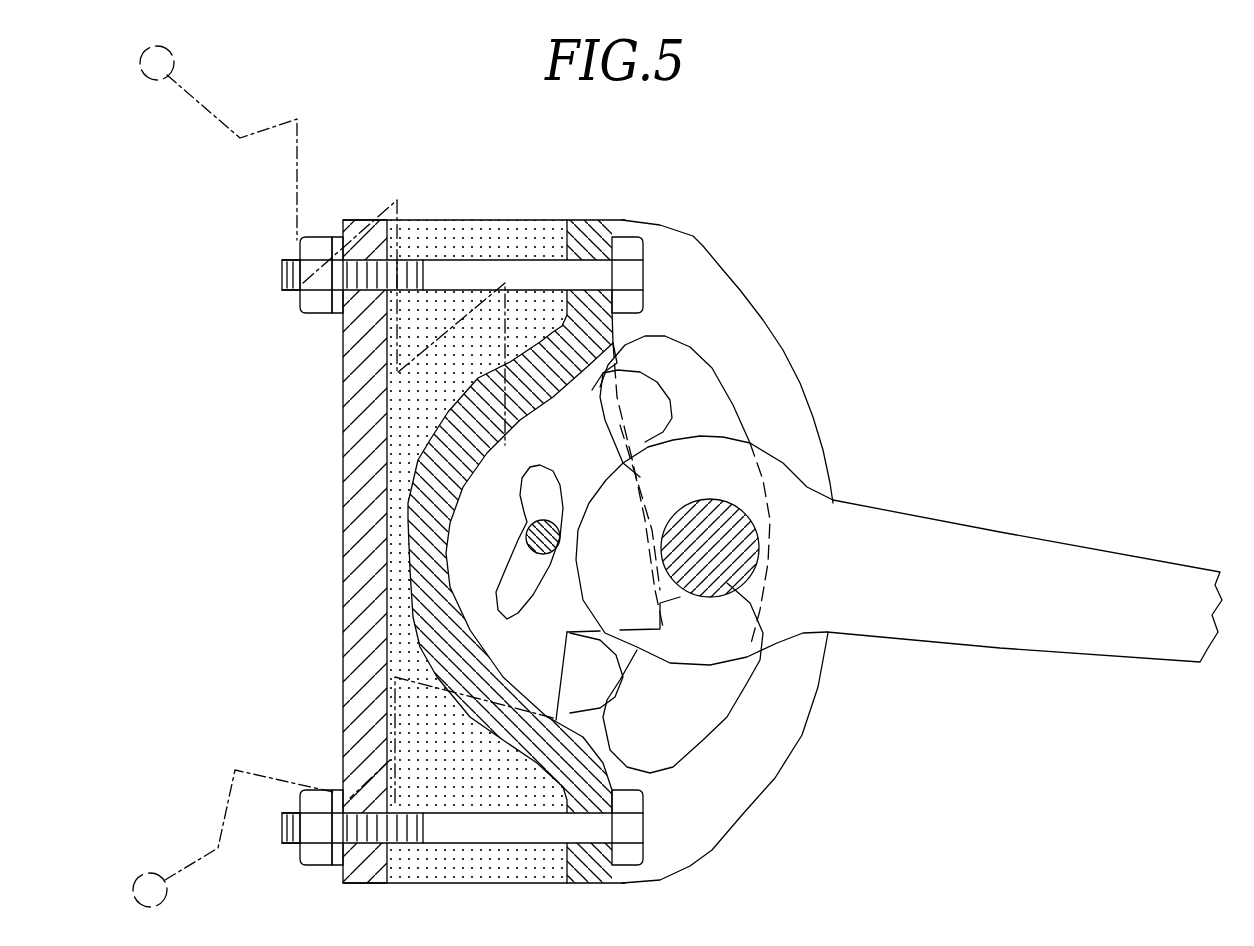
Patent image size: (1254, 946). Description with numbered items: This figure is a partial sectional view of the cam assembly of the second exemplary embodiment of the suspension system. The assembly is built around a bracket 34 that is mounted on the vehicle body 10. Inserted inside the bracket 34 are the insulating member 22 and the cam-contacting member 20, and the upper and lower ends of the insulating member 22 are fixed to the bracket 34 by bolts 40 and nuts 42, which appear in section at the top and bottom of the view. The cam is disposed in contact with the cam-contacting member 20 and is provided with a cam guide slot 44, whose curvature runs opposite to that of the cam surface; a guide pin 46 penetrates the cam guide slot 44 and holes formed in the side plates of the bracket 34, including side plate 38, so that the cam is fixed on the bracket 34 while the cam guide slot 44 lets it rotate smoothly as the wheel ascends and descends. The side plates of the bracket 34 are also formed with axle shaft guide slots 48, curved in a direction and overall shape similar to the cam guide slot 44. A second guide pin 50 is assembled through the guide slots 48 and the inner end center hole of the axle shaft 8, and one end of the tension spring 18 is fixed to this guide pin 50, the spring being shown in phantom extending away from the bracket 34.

The axle shaft 8 is at (1075, 555).
The vehicle body 10 is at (281, 551).
The tension spring 18 is at (191, 476).
The cam-contacting member 20 is at (548, 342).
The insulating member 22 is at (362, 501).
The bracket 34 is at (889, 523).
The side plate 38 is at (731, 296).
The bolts 40 is at (453, 267).
The nuts 42 is at (312, 305).
The cam guide slot 44 is at (366, 548).
The guide pin 46 is at (365, 531).
The axle shaft guide slots 48 is at (713, 390).
The guide pin 50 is at (740, 585).